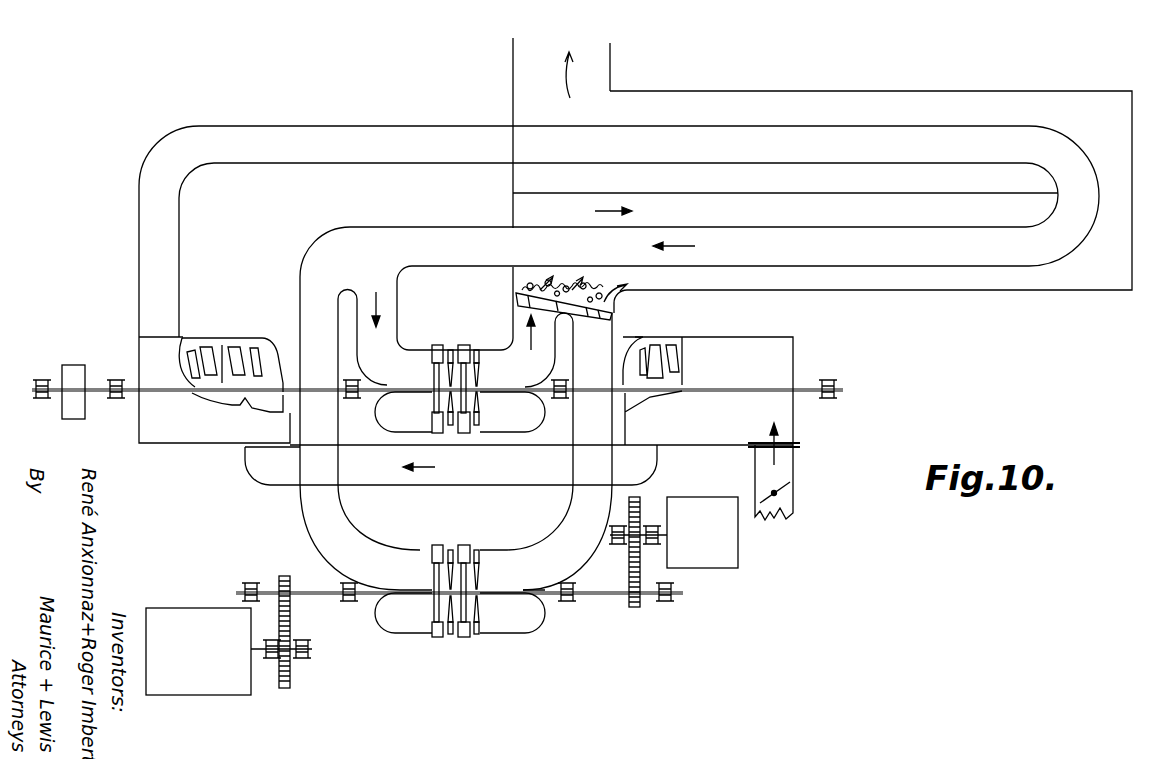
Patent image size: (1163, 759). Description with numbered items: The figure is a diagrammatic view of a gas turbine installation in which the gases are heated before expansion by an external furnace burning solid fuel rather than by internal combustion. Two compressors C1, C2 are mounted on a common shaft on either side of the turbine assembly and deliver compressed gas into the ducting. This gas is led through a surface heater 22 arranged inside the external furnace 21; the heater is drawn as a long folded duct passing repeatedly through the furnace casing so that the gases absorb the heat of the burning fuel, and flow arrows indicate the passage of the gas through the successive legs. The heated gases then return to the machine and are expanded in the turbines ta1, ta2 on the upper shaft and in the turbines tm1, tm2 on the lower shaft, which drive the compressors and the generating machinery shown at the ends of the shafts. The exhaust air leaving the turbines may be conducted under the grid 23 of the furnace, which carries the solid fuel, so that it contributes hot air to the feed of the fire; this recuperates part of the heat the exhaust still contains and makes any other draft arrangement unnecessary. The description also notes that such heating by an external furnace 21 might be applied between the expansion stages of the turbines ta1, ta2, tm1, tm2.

The external furnace 21 is at (926, 280).
The surface heater 22 is at (815, 137).
The grid 23 is at (614, 316).
The compressor C1 is at (214, 390).
The compressor C2 is at (708, 391).
The turbine ta1 is at (414, 389).
The turbine ta2 is at (501, 389).
The turbine tm1 is at (414, 591).
The turbine tm2 is at (501, 591).